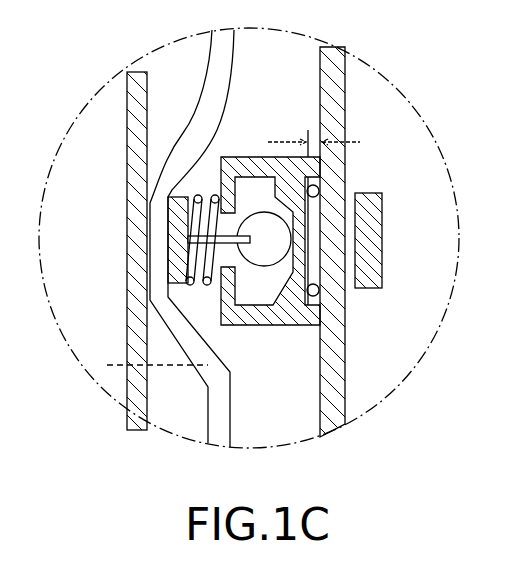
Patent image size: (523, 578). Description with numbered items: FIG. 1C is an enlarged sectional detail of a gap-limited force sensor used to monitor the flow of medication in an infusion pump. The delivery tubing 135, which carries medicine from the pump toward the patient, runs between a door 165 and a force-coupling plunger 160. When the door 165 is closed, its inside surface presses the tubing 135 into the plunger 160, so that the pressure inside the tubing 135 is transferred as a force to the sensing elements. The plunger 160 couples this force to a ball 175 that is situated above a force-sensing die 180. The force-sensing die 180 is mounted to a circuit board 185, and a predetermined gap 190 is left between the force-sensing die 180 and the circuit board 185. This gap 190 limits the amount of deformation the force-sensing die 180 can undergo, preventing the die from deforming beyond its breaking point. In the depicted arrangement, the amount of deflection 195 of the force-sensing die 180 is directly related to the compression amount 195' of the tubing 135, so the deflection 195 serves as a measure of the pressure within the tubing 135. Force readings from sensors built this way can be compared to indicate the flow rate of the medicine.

The delivery tubing 135 is at (218, 400).
The force-coupling plunger 160 is at (168, 216).
The door 165 is at (126, 257).
The ball 175 is at (263, 258).
The force-sensing die 180 is at (279, 300).
The circuit board 185 is at (331, 378).
The predetermined gap 190 is at (307, 128).
The amount of deflection 195 is at (375, 258).
The compression amount 195' is at (157, 416).